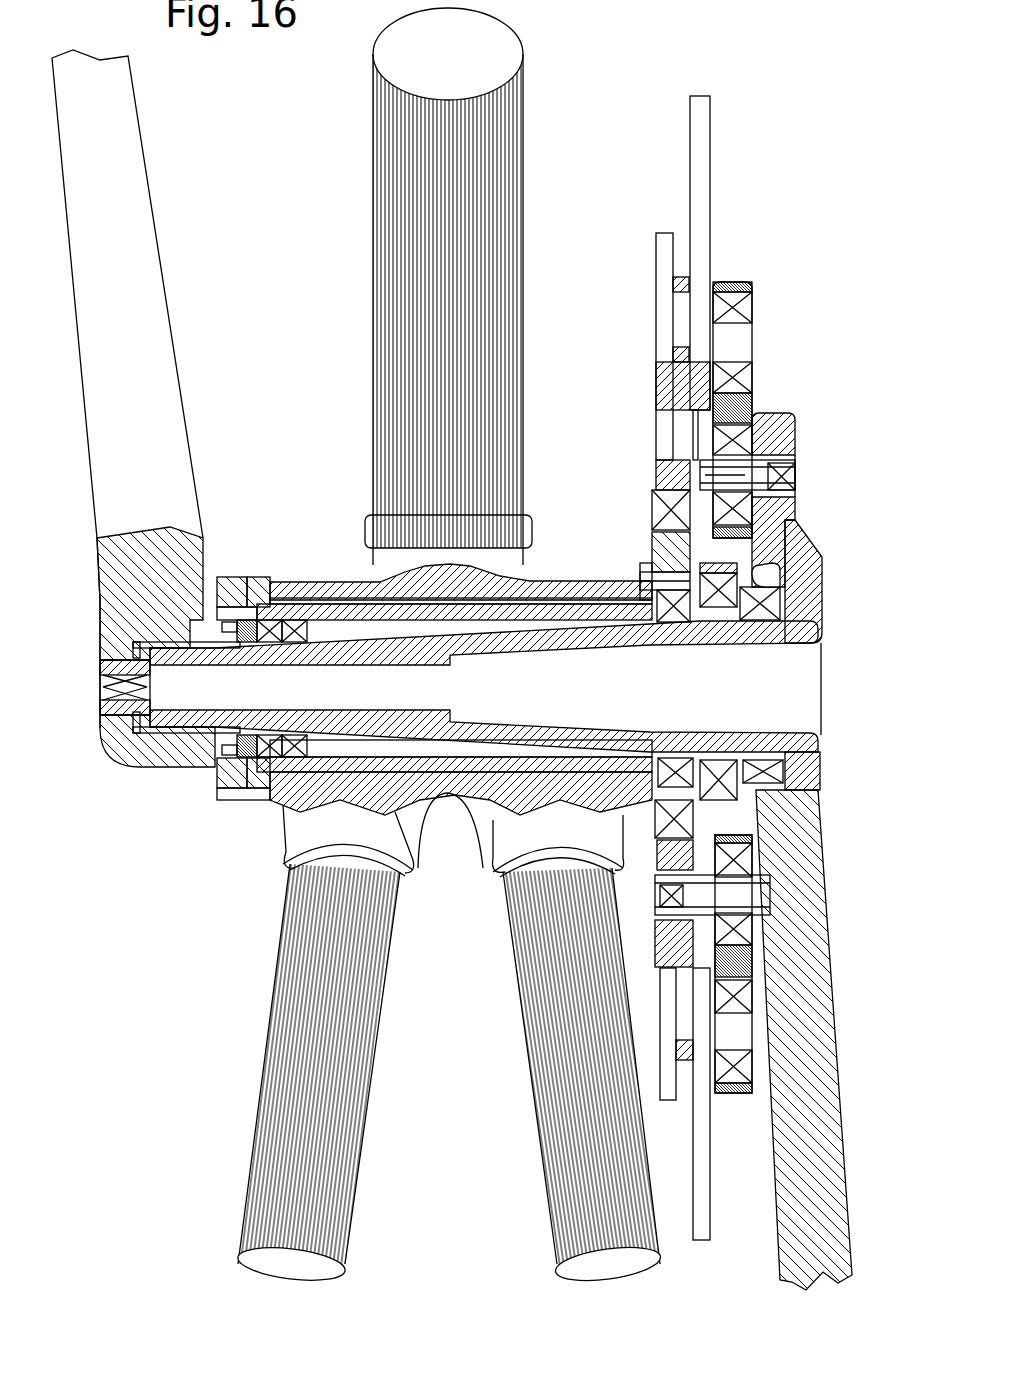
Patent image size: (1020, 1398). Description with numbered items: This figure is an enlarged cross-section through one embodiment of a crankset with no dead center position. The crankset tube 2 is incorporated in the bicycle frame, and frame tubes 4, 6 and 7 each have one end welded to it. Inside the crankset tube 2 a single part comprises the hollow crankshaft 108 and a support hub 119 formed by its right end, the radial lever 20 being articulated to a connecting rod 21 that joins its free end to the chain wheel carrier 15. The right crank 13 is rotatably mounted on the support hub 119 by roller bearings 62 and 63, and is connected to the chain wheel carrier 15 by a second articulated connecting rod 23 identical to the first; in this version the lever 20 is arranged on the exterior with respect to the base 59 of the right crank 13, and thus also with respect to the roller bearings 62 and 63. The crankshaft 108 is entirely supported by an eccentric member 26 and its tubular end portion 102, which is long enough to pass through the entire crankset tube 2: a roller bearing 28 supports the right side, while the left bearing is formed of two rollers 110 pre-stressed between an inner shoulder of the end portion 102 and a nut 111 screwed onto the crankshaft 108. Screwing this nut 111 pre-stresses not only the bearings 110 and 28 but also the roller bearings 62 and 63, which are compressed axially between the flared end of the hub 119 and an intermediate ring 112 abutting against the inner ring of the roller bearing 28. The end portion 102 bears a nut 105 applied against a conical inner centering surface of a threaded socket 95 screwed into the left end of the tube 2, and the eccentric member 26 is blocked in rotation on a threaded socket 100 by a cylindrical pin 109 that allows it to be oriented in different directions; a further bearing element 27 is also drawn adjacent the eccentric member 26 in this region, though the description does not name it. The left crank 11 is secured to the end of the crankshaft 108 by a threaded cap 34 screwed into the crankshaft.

The crankset tube 2 is at (315, 600).
The frame tube 4 is at (390, 312).
The frame tube 6 is at (265, 1185).
The frame tube 7 is at (555, 1150).
The left crank 11 is at (100, 470).
The right crank 13 is at (828, 1150).
The chain wheel carrier 15 is at (660, 390).
The radial lever 20 is at (798, 545).
The articulated connecting rod 21 is at (740, 408).
The articulated connecting rod 23 is at (752, 965).
The eccentric member 26 is at (665, 545).
The bearing 27 is at (660, 500).
The roller bearing 28 is at (680, 757).
The threaded cap 34 is at (100, 665).
The base of right crank 59 is at (766, 567).
The roller bearing 62 is at (762, 624).
The roller bearing 63 is at (782, 605).
The threaded socket 95 is at (264, 578).
The threaded socket 100 is at (582, 582).
The tubular end portion 102 is at (356, 602).
The nut 105 is at (238, 578).
The hollow crankshaft 108 is at (483, 737).
The cylindrical pin 109 is at (646, 568).
The rollers 110 is at (295, 757).
The nut 111 is at (218, 788).
The intermediate ring 112 is at (720, 610).
The support hub 119 is at (672, 626).